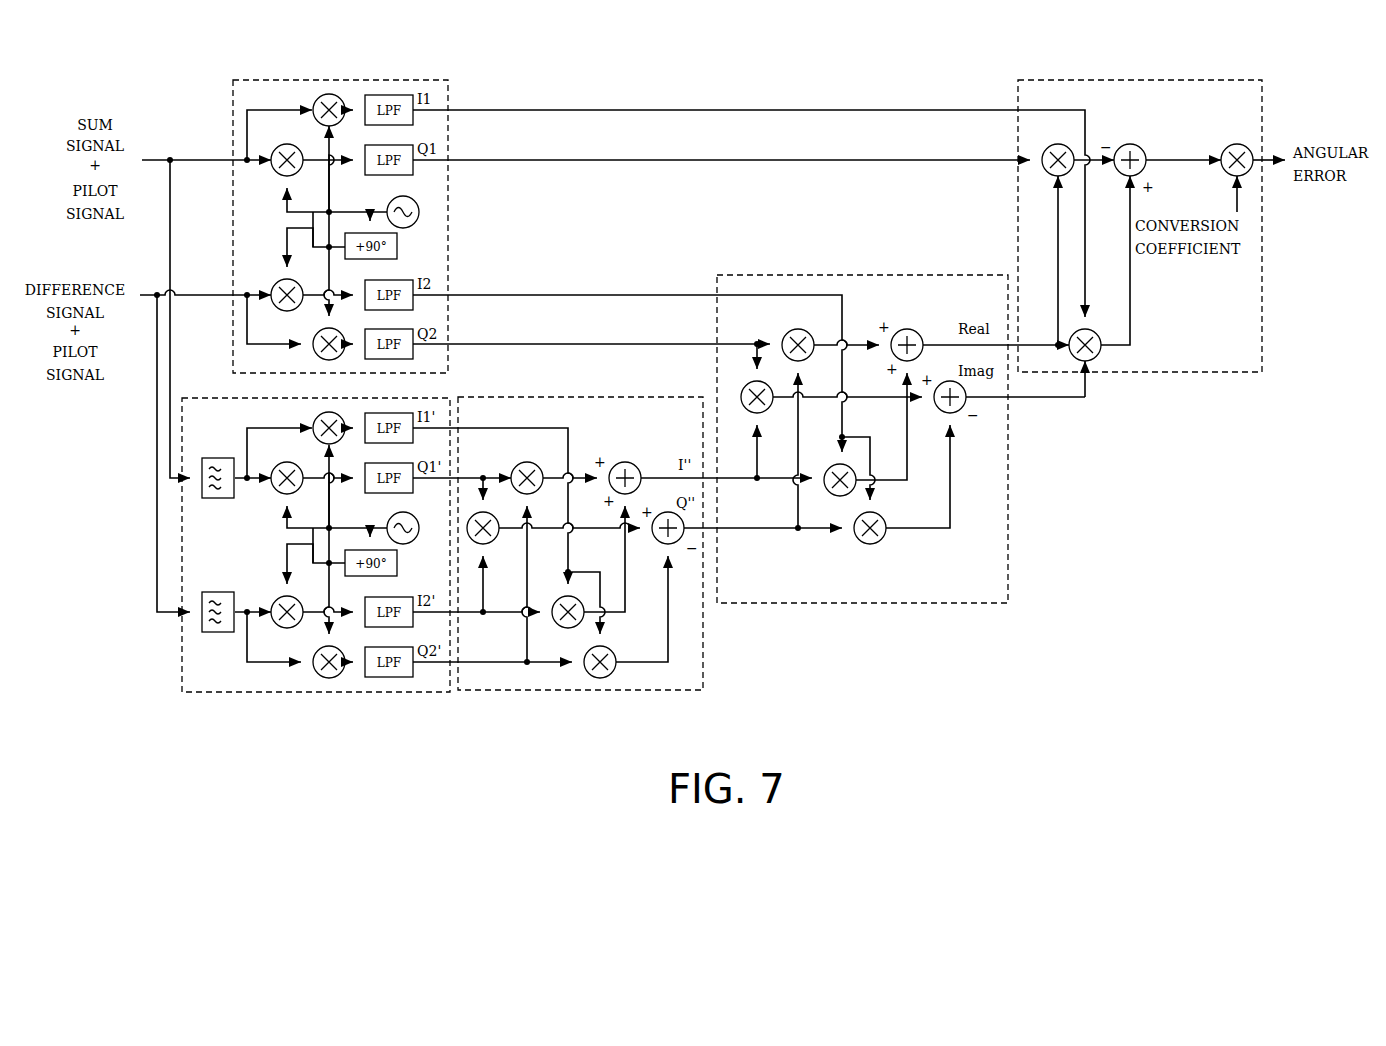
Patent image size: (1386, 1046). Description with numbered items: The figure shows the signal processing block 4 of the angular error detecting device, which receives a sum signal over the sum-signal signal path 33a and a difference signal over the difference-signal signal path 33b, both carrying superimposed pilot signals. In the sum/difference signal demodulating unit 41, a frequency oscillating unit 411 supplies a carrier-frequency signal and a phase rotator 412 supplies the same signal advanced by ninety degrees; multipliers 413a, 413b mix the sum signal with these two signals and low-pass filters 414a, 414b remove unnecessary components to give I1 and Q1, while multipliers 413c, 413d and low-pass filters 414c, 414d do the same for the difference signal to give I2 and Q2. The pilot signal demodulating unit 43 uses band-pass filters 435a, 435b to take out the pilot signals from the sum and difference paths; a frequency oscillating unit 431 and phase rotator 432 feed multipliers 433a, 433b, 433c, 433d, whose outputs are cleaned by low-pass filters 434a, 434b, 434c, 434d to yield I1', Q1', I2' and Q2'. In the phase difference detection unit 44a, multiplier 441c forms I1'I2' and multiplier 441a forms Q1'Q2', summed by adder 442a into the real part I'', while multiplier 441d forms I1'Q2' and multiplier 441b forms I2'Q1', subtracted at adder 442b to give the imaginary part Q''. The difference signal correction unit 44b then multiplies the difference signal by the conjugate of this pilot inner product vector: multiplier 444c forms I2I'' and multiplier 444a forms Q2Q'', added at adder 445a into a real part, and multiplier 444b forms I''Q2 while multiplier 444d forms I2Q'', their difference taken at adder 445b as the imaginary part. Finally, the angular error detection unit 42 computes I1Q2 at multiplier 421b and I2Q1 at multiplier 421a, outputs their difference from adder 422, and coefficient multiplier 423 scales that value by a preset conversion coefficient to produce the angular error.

The signal processing block 4 is at (800, 52).
The sum-signal signal path 33a is at (163, 144).
The difference-signal signal path 33b is at (150, 292).
The sum/difference signal demodulating unit 41 is at (365, 80).
The frequency oscillating unit 411 is at (419, 212).
The phase rotator 412 is at (397, 246).
The multiplier 413a is at (327, 92).
The multiplier 413b is at (292, 145).
The multiplier 413c is at (276, 284).
The multiplier 413d is at (318, 356).
The low-pass filter 414a is at (401, 95).
The low-pass filter 414b is at (414, 171).
The low-pass filter 414c is at (403, 280).
The low-pass filter 414d is at (403, 329).
The angular error detection unit 42 is at (1213, 80).
The multiplier 421a is at (1060, 144).
The multiplier 421b is at (1097, 357).
The adder 422 is at (1126, 144).
The coefficient multiplier 423 is at (1236, 144).
The pilot signal demodulating unit 43 is at (222, 696).
The frequency oscillating unit 431 is at (391, 518).
The phase rotator 432 is at (335, 560).
The multiplier 433a is at (317, 416).
The multiplier 433b is at (277, 492).
The multiplier 433c is at (276, 598).
The multiplier 433d is at (325, 680).
The low-pass filter 434a is at (385, 413).
The low-pass filter 434b is at (414, 464).
The low-pass filter 434c is at (414, 620).
The low-pass filter 434d is at (405, 678).
The band-pass filter 435a is at (200, 470).
The band-pass filter 435b is at (200, 620).
The phase difference detection unit 44a is at (677, 692).
The multiplier 441a is at (525, 462).
The multiplier 441b is at (473, 544).
The multiplier 441c is at (563, 626).
The multiplier 441d is at (603, 678).
The adder 442a is at (618, 463).
The adder 442b is at (665, 512).
The difference signal correction unit 44b is at (955, 606).
The multiplier 444a is at (800, 329).
The multiplier 444b is at (743, 389).
The multiplier 444c is at (832, 494).
The multiplier 444d is at (882, 541).
The adder 445a is at (918, 315).
The adder 445b is at (963, 407).